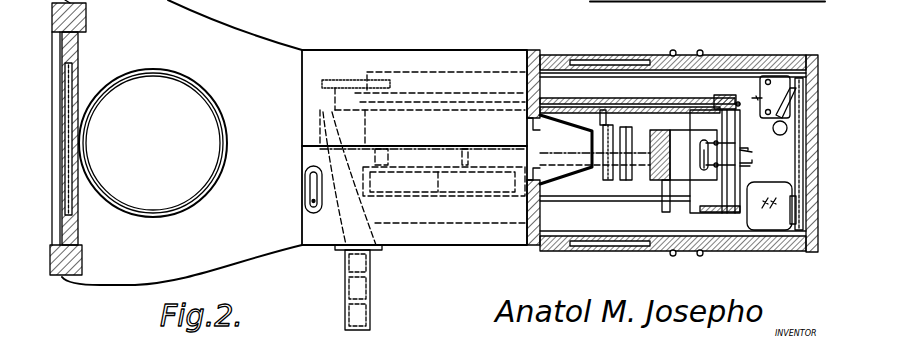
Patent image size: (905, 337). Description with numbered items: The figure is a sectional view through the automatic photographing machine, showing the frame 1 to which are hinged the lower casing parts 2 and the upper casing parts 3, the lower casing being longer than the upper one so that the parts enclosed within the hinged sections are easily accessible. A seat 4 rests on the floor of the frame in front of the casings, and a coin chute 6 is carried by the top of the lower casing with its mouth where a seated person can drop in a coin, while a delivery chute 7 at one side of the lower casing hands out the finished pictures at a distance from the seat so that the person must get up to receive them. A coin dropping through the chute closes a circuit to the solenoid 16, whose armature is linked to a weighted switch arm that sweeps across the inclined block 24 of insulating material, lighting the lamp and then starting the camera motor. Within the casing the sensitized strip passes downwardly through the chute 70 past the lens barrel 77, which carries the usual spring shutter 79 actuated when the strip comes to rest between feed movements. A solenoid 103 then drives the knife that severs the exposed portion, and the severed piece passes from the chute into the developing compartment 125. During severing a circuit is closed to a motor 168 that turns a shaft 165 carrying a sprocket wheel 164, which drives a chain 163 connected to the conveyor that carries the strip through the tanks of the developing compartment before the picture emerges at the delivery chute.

The frame 1 is at (265, 50).
The lower casing parts 2 is at (453, 50).
The upper casing parts 3 is at (618, 58).
The seat 4 is at (208, 175).
The coin chute 6 is at (304, 203).
The delivery chute 7 is at (377, 249).
The solenoid 16 is at (812, 66).
The block of insulating material 24 is at (797, 109).
The chute 70 is at (692, 137).
The lens barrel 77 is at (642, 165).
The spring shutter 79 is at (627, 180).
The solenoid 103 is at (735, 105).
The developing compartment 125 is at (463, 125).
The chain 163 is at (628, 100).
The sprocket wheel 164 is at (722, 100).
The shaft 165 is at (760, 176).
The motor 168 is at (768, 222).